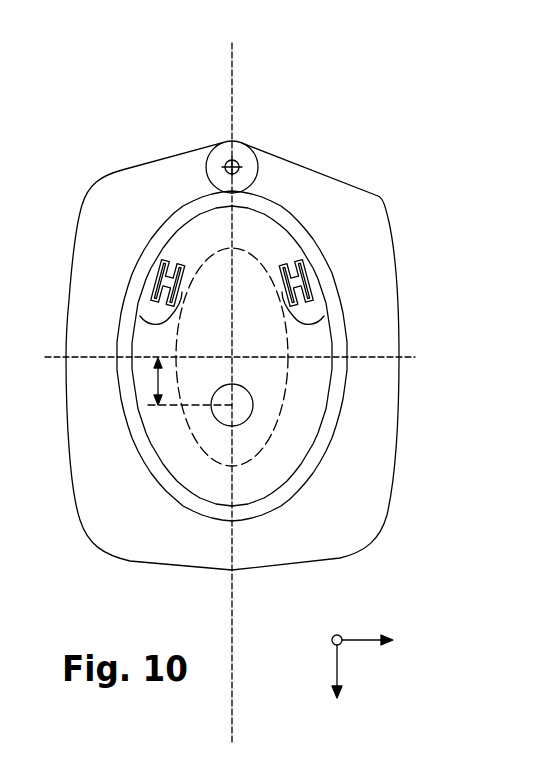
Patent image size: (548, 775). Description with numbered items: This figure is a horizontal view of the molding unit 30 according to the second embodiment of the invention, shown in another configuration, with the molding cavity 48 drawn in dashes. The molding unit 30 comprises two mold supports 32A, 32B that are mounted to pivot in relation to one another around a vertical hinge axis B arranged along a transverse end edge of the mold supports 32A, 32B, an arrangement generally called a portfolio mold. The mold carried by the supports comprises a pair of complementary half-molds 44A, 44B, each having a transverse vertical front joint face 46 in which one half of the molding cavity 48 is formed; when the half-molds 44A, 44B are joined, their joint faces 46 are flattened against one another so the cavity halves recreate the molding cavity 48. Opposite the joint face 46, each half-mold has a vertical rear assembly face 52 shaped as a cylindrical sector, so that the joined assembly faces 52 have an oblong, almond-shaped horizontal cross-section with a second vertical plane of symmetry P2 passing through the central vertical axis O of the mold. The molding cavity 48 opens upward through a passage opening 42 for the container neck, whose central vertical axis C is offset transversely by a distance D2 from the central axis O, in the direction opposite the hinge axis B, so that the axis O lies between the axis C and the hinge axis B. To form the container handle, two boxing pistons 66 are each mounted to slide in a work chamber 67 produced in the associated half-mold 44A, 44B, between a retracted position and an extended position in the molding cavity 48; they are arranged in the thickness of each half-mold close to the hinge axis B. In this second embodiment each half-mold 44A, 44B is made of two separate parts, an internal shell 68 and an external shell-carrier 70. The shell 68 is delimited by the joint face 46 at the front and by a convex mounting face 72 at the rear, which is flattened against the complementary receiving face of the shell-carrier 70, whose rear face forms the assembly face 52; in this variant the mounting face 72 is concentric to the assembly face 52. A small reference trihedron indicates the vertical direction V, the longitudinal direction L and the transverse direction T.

The molding unit 30 is at (319, 103).
The mold support 32A is at (173, 180).
The mold support 32B is at (312, 177).
The half-mold 44A is at (150, 211).
The half-mold 44B is at (334, 232).
The shell-carrier 70 is at (150, 247).
The work chamber 67 is at (156, 276).
The boxing piston 66 is at (140, 316).
The assembly face 52 is at (128, 320).
The molding cavity 48 is at (185, 430).
The passage opening 42 is at (245, 395).
The mounting face 72 is at (155, 460).
The shell 68 is at (188, 467).
The joint face 46 is at (232, 482).
The hinge axis B is at (234, 165).
The central vertical axis of the mold O is at (232, 357).
The central vertical axis of the passage opening C is at (237, 412).
The offset distance D2 is at (178, 381).
The second vertical plane of symmetry P2 is at (412, 357).
The vertical axis V is at (326, 631).
The longitudinal axis L is at (377, 642).
The transverse axis T is at (336, 685).